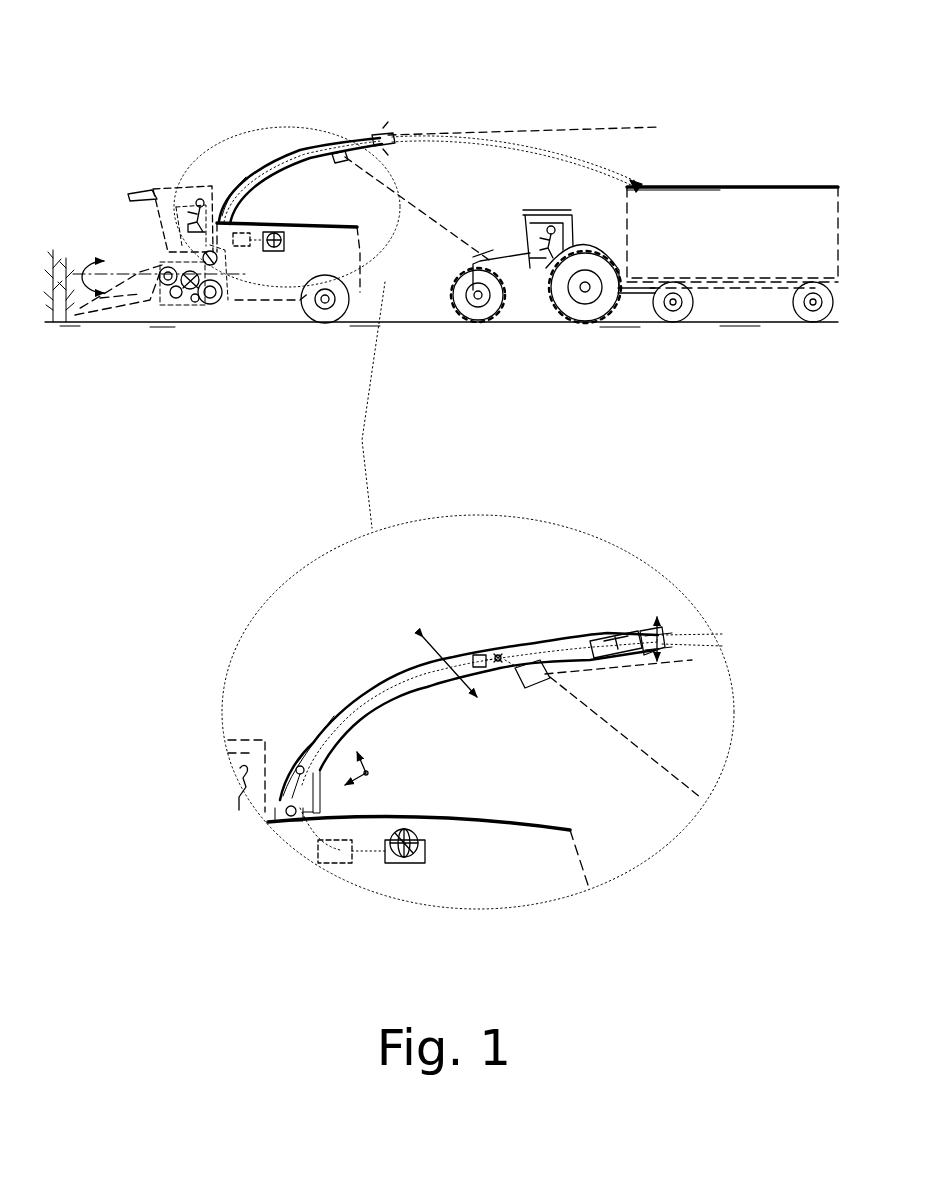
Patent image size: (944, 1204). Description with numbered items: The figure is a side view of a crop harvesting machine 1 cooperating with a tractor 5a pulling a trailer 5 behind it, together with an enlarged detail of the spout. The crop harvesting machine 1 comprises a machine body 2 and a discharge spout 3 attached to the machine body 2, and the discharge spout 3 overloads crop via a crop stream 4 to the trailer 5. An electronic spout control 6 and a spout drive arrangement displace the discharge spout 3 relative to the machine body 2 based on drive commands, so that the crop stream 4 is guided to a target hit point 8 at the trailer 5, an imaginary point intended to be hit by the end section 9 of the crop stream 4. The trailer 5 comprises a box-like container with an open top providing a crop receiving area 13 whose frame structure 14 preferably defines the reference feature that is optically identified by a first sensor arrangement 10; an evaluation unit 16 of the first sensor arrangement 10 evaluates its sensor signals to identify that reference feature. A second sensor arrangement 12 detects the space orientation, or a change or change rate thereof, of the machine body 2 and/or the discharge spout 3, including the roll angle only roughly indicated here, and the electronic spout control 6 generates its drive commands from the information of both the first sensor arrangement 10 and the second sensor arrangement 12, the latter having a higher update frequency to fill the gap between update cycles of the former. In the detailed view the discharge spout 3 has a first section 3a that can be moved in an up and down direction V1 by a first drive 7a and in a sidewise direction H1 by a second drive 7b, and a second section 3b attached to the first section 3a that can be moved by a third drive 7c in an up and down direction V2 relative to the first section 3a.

The crop harvesting machine 1 is at (126, 112).
The machine body 2 is at (253, 288).
The discharge spout 3 is at (273, 142).
The first section 3a is at (240, 172).
The second section 3b is at (383, 136).
The crop stream 4 is at (450, 137).
The trailer 5 is at (722, 104).
The tractor 5a is at (528, 286).
The electronic spout control 6 is at (240, 250).
The first drive 7a is at (292, 828).
The second drive 7b is at (281, 770).
The third drive 7c is at (612, 637).
The target hit point 8 is at (643, 182).
The end section 9 is at (602, 152).
The first sensor arrangement 10 is at (337, 156).
The second sensor arrangement 12 is at (270, 252).
The crop receiving area 13 is at (762, 180).
The frame structure 14 is at (702, 182).
The evaluation unit 16 is at (482, 652).
The up and down direction V1 is at (460, 662).
The up and down direction V2 is at (663, 645).
The sidewise direction H1 is at (368, 773).